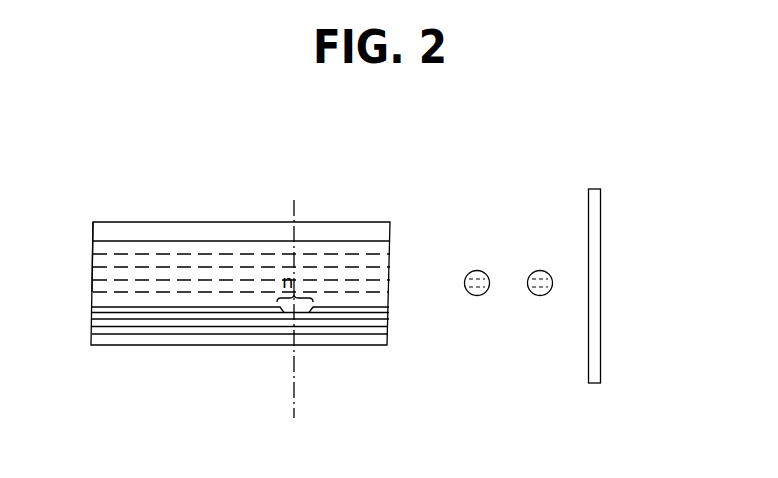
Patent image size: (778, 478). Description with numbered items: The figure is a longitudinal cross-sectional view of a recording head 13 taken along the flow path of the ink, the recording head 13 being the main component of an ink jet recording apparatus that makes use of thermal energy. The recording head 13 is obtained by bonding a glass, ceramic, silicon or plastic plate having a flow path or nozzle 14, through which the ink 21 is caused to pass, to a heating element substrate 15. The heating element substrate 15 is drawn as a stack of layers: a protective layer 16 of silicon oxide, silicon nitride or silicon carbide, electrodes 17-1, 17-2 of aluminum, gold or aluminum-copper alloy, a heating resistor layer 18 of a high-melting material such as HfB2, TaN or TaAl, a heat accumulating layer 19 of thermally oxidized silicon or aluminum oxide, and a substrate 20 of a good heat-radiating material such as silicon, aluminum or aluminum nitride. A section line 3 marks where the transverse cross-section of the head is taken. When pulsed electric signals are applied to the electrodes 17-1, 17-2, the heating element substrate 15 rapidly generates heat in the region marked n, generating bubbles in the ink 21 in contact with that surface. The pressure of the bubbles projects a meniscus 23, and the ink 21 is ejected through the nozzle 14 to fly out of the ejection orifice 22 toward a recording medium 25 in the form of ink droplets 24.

The line 3- 3 is at (293, 311).
The recording head 13 is at (177, 222).
The flow path (nozzle) 14 is at (245, 240).
The heating element substrate 15 is at (80, 305).
The protective layer 16 is at (113, 310).
The electrode 17-1 is at (158, 318).
The electrode 17-2 is at (368, 317).
The heating resistor layer 18 is at (222, 323).
The heat accumulating layer 19 is at (263, 330).
The substrate 20 is at (322, 346).
The ink 21 is at (117, 250).
The ejection orifice 22 is at (395, 302).
The meniscus 23 is at (387, 275).
The ink droplets 24 is at (555, 258).
The recording medium 25 is at (588, 216).